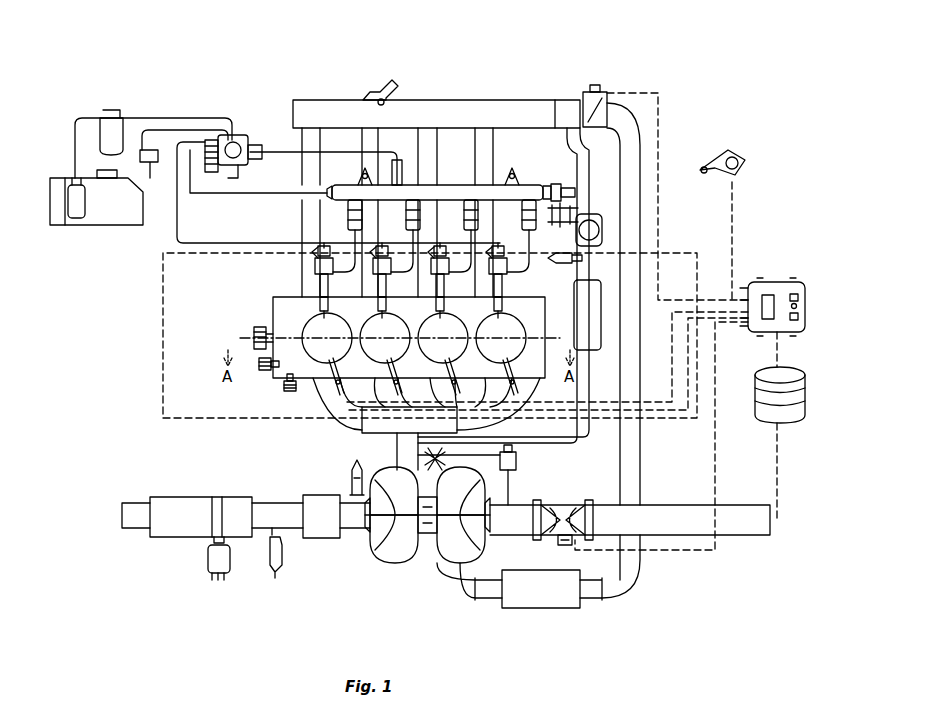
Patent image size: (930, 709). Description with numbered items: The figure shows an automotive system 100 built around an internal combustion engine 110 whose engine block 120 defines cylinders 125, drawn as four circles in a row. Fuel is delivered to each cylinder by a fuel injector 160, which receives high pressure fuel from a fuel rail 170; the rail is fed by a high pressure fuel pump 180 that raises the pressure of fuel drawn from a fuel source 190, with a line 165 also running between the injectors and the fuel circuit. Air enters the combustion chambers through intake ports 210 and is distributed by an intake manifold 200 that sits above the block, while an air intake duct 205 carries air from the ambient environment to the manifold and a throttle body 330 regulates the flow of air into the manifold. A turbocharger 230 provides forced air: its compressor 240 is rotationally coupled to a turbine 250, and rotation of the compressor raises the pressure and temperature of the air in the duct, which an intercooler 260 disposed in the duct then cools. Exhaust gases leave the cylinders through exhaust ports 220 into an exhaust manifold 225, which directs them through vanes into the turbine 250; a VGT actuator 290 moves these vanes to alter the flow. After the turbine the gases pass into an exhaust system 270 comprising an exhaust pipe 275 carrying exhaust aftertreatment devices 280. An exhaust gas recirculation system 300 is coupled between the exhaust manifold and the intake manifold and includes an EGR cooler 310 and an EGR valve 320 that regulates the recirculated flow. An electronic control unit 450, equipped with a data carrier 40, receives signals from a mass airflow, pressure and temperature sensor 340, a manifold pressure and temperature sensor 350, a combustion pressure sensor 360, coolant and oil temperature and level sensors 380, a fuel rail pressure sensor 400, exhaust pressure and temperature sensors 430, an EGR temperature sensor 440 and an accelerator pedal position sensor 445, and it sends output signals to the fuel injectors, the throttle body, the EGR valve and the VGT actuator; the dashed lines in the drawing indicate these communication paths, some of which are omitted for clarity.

The automotive system 100 is at (213, 80).
The internal combustion engine 110 is at (510, 84).
The engine block 120 is at (270, 300).
The cylinder 125 is at (575, 300).
The fuel injector 160 is at (313, 280).
The fuel return line 165 is at (330, 228).
The fuel rail 170 is at (330, 197).
The high pressure fuel pump 180 is at (243, 132).
The fuel source 190 is at (116, 212).
The intake manifold 200 is at (432, 96).
The air intake duct 205 is at (740, 503).
The intake port 210 is at (253, 300).
The exhaust port 220 is at (330, 380).
The exhaust manifold 225 is at (395, 430).
The turbocharger 230 is at (397, 565).
The compressor 240 is at (452, 568).
The turbine 250 is at (417, 544).
The intercooler 260 is at (572, 595).
The exhaust system 270 is at (160, 490).
The exhaust pipe 275 is at (135, 515).
The exhaust aftertreatment device 280 is at (175, 520).
The VGT actuator 290 is at (450, 462).
The exhaust gas recirculation system 300 is at (560, 450).
The EGR cooler 310 is at (600, 350).
The EGR valve 320 is at (597, 215).
The throttle body 330 is at (596, 88).
The mass airflow, pressure, temperature sensor 340 is at (560, 537).
The manifold pressure and temperature sensor 350 is at (372, 90).
The combustion pressure sensor 360 is at (380, 428).
The coolant and oil temperature and level sensors 380 is at (282, 390).
The fuel rail pressure sensor 400 is at (630, 110).
The exhaust pressure and temperature sensors 430 is at (275, 575).
The EGR temperature sensor 440 is at (585, 258).
The accelerator pedal position sensor 445 is at (738, 152).
The electronic control unit 450 is at (777, 280).
The data carrier 40 is at (780, 425).